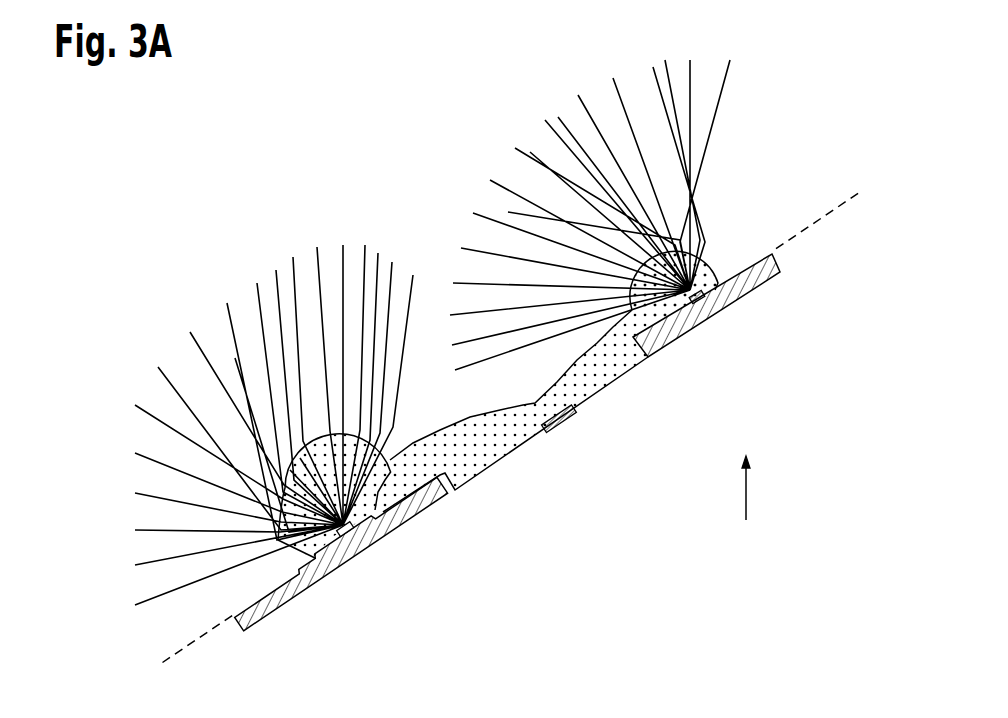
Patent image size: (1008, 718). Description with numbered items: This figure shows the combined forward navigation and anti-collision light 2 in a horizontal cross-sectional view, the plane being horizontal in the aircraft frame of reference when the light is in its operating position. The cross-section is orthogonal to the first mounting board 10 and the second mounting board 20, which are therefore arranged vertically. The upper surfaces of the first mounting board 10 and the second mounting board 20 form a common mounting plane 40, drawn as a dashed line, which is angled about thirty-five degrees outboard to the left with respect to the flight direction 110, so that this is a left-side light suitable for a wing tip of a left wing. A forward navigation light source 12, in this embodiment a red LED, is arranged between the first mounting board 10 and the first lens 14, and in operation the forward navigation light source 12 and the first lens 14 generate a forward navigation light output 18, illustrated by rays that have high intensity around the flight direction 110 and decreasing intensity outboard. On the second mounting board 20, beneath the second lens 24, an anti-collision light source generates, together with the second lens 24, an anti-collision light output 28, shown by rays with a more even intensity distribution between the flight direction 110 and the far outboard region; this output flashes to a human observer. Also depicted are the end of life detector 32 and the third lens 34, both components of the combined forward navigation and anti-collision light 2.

The combined forward navigation and anti-collision light 2 is at (481, 361).
The first mounting board 10 is at (333, 563).
The forward navigation light source 12 is at (350, 535).
The first lens 14 is at (382, 500).
The forward navigation light output 18 is at (214, 260).
The second mounting board 20 is at (683, 340).
The second lens 24 is at (702, 300).
The anti-collision light output 28 is at (490, 142).
The end of life detector 32 is at (567, 428).
The third lens 34 is at (483, 458).
The common mounting plane 40 is at (834, 207).
The flight direction 110 is at (757, 497).